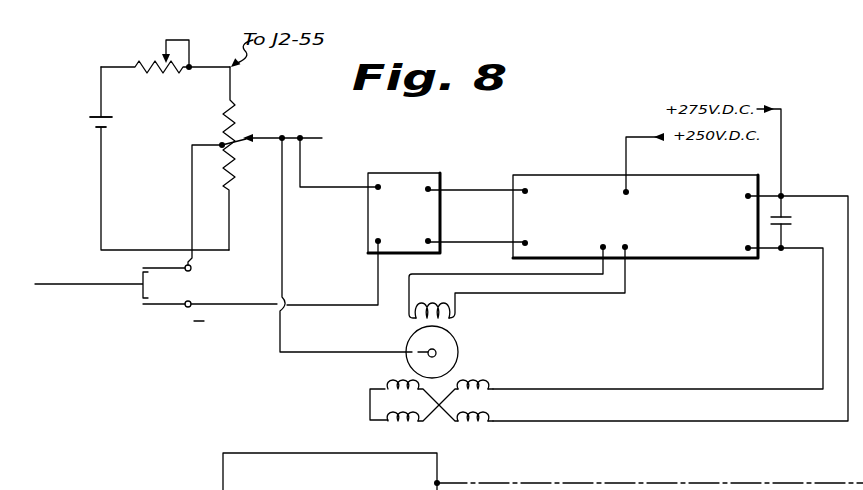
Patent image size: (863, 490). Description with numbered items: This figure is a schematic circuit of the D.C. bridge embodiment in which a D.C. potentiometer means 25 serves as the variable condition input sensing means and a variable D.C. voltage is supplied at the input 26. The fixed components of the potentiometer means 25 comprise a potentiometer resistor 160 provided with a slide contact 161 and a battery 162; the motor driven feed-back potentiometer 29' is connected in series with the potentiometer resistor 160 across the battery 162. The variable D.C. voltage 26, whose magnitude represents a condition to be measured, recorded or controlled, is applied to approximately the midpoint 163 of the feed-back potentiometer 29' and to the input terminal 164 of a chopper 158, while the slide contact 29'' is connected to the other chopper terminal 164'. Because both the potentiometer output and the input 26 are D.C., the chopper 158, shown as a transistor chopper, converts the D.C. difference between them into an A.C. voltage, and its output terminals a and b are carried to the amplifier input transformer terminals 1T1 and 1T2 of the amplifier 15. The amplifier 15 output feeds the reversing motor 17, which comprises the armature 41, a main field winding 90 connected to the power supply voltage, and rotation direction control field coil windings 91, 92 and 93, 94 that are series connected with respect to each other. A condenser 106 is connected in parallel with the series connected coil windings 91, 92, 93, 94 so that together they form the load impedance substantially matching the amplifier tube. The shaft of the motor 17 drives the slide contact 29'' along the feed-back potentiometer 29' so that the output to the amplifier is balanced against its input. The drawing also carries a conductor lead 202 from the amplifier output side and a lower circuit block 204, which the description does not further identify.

The D.C. potentiometer means 25 is at (168, 142).
The variable D.C. voltage input 26 is at (119, 293).
The feed-back potentiometer 29' is at (207, 203).
The slide contact 29'' is at (272, 154).
The potentiometer resistor 160 is at (165, 76).
The slide contact 161 is at (163, 46).
The battery 162 is at (91, 122).
The midpoint of potentiometer 163 is at (222, 142).
The chopper input terminal 164 is at (355, 241).
The chopper input terminal 164' is at (354, 176).
The chopper 158 is at (420, 198).
The chopper output terminal a is at (434, 188).
The chopper output terminal b is at (434, 240).
The amplifier input transformer terminal 1T1 is at (527, 188).
The amplifier input transformer terminal 1T2 is at (523, 245).
The amplifier 15 is at (699, 228).
The condenser 106 is at (784, 215).
The amplifier output lead 202 is at (678, 296).
The main field winding 90 is at (446, 303).
The reversing motor 17 is at (488, 361).
The armature 41 is at (452, 336).
The rotation direction control field coil winding 91 is at (484, 382).
The rotation direction control field coil winding 92 is at (408, 424).
The rotation direction control field coil winding 93 is at (488, 432).
The rotation direction control field coil winding 94 is at (396, 381).
The lower circuit block 204 is at (543, 471).